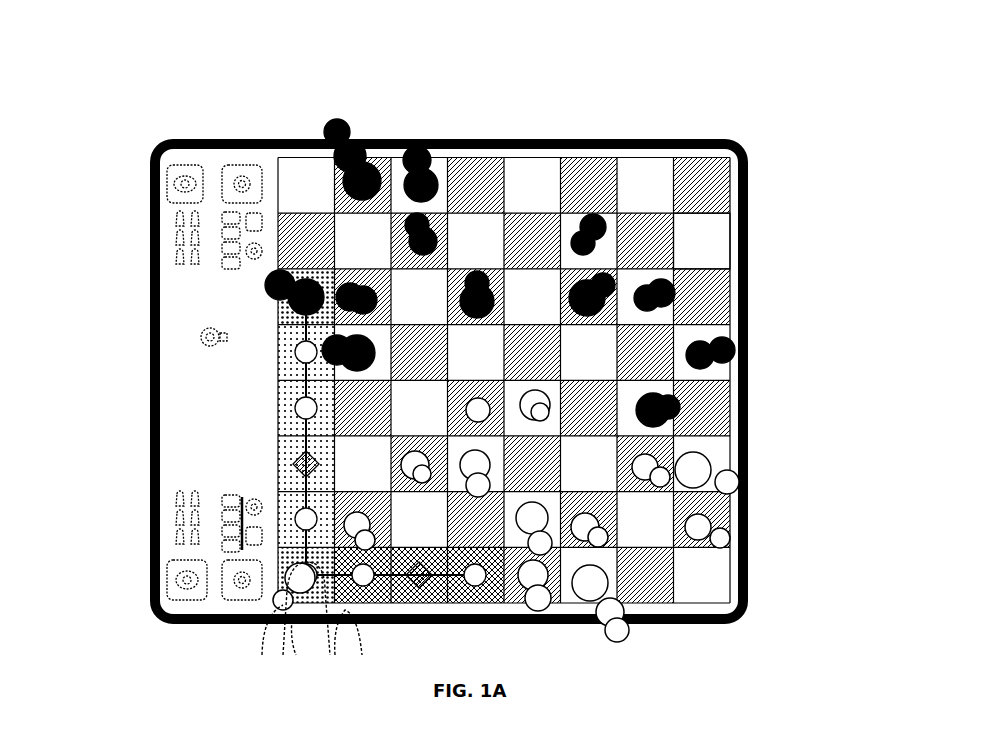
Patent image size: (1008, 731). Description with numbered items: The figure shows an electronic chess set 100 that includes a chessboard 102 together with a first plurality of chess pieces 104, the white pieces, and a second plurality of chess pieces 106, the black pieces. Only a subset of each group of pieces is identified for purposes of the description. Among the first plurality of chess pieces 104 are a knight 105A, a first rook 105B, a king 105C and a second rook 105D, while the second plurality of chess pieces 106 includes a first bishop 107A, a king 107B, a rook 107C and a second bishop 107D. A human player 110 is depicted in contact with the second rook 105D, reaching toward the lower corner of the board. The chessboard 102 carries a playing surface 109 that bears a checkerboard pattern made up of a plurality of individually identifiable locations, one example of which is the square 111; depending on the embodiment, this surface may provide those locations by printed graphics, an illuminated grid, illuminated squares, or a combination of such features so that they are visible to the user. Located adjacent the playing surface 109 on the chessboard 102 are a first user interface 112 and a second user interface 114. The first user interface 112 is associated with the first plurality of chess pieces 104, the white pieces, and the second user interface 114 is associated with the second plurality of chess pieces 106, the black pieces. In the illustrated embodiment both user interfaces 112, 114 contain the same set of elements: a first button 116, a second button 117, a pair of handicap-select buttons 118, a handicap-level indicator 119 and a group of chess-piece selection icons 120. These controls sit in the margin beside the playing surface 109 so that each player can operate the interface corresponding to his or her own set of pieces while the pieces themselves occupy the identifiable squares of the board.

The chess set 100 is at (131, 84).
The chessboard 102 is at (735, 131).
The first plurality of chess pieces 104 is at (836, 440).
The knight 105A is at (744, 474).
The first rook 105B is at (535, 566).
The king 105C is at (617, 612).
The second rook 105D is at (287, 596).
The second plurality of chess pieces 106 is at (537, 64).
The first bishop 107A is at (281, 272).
The king 107B is at (352, 124).
The rook 107C is at (418, 150).
The second bishop 107D is at (476, 270).
The playing surface 109 is at (647, 205).
The human player 110 is at (256, 639).
The square 111 is at (712, 238).
The first user interface 112 is at (256, 490).
The second user interface 114 is at (256, 273).
The first button 116 is at (230, 567).
The second button 117 is at (175, 578).
The pair of handicap-select buttons 118 is at (236, 522).
The handicap-level indicator 119 is at (232, 497).
The chess-piece selection icons 120 is at (175, 512).